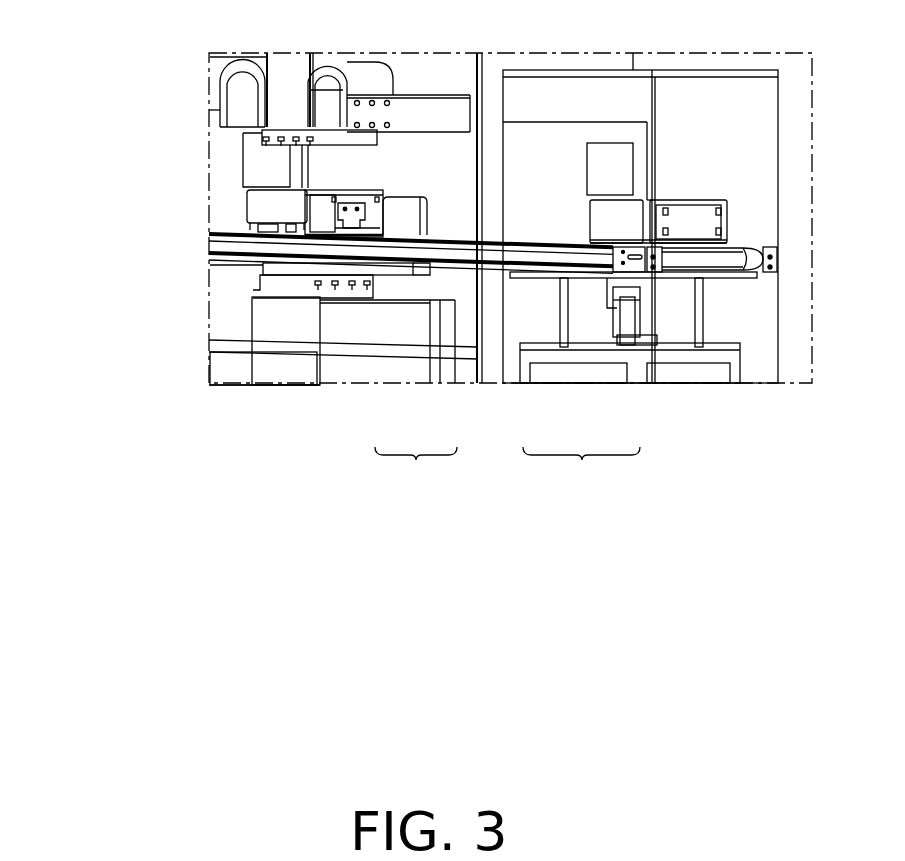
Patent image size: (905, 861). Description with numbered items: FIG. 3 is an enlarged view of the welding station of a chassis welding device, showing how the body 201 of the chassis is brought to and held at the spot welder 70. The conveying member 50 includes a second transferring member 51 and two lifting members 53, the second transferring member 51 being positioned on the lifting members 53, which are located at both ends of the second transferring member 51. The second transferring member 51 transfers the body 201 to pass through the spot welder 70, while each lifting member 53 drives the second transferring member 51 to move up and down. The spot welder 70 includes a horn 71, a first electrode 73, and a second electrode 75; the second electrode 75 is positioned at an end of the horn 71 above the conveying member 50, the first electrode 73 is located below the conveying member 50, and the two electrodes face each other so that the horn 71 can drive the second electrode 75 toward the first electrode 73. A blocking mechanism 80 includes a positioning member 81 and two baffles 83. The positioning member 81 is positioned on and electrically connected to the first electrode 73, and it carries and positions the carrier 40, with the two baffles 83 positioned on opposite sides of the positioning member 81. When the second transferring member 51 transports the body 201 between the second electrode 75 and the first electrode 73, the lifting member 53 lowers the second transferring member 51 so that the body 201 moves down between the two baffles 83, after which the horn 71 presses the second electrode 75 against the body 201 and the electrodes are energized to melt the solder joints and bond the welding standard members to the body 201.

The body 201 is at (323, 190).
The spot welder 70 is at (80, 130).
The horn 71 is at (283, 93).
The first electrode 73 is at (338, 138).
The second electrode 75 is at (277, 287).
The carrier 40 is at (327, 223).
The blocking mechanism 80 is at (416, 469).
The positioning member 81 is at (332, 234).
The baffles 83 is at (353, 222).
The conveying member 50 is at (581, 469).
The second transferring member 51 is at (562, 257).
The lifting member 53 is at (633, 300).